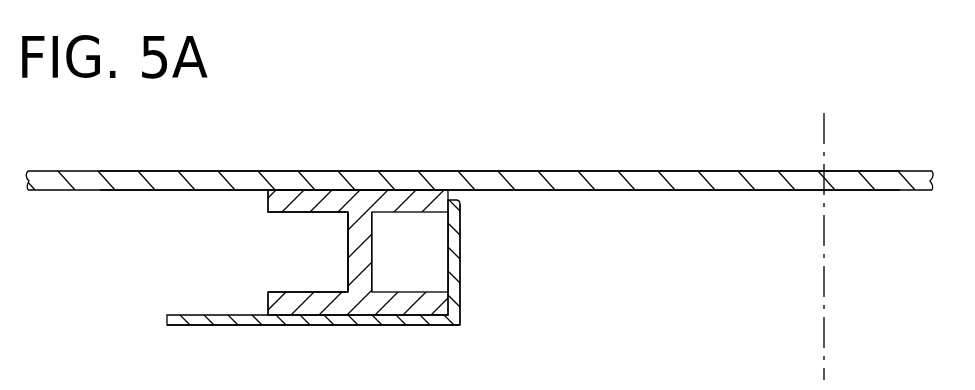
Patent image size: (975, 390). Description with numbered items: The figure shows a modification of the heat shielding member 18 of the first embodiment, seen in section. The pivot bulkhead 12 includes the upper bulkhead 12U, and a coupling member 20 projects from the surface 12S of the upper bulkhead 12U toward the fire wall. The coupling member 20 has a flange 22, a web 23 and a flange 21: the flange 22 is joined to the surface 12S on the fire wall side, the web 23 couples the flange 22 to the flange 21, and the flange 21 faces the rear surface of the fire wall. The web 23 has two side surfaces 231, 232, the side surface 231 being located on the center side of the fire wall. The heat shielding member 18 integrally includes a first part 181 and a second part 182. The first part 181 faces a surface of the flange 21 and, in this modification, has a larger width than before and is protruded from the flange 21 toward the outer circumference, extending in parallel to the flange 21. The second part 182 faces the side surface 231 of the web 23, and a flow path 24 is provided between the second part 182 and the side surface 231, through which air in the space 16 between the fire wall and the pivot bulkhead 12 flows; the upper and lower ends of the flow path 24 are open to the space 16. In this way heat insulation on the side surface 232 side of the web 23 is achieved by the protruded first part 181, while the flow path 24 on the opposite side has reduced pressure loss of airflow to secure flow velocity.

The pivot bulkhead 12 is at (722, 164).
The upper bulkhead 12U is at (768, 171).
The surface 12S is at (662, 190).
The space 16 is at (620, 306).
The heat shielding member 18 is at (435, 323).
The first part 181 is at (383, 326).
The second part 182 is at (460, 252).
The coupling member 20 is at (414, 197).
The flange 21 is at (267, 302).
The flange 22 is at (267, 203).
The web 23 is at (348, 253).
The side surface 231 is at (372, 278).
The side surface 232 is at (348, 272).
The flow path 24 is at (427, 265).